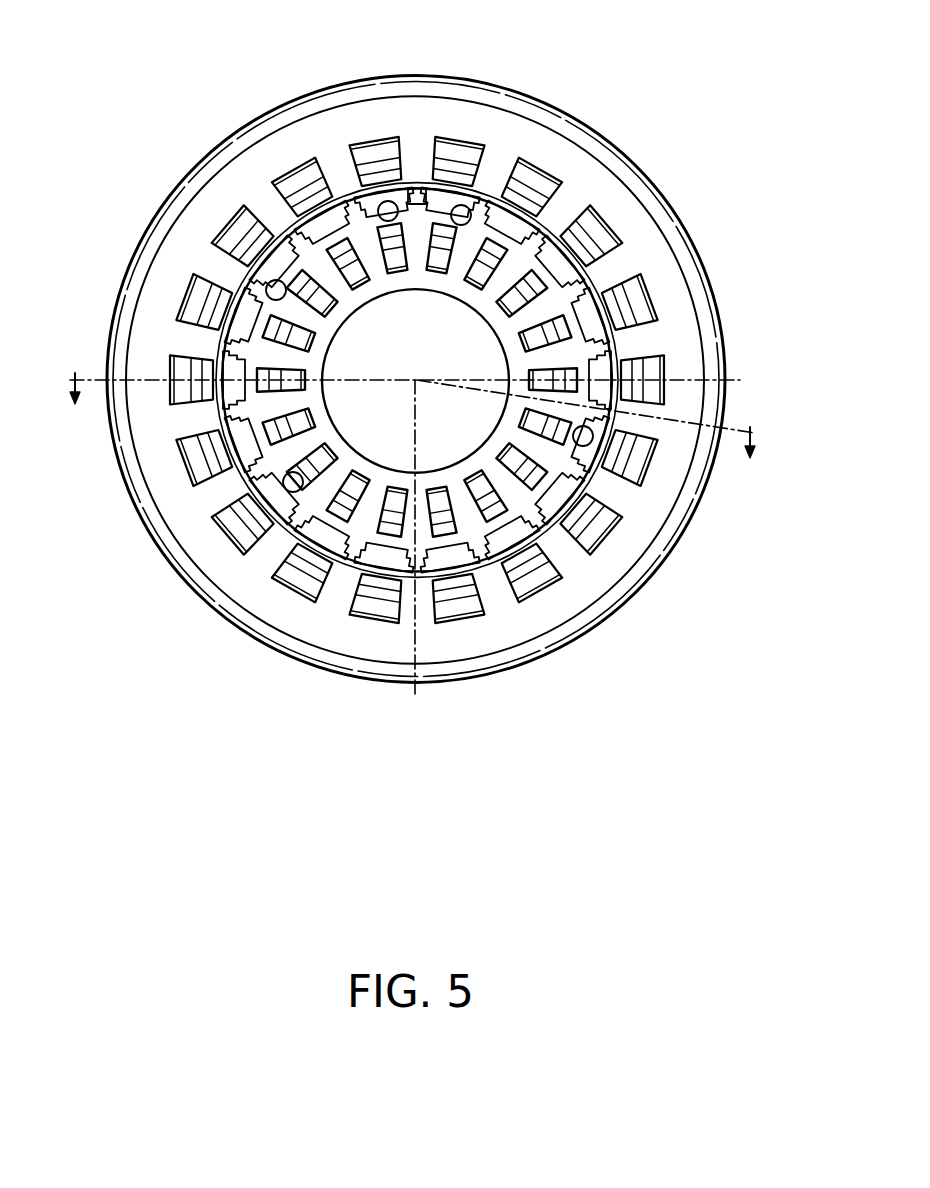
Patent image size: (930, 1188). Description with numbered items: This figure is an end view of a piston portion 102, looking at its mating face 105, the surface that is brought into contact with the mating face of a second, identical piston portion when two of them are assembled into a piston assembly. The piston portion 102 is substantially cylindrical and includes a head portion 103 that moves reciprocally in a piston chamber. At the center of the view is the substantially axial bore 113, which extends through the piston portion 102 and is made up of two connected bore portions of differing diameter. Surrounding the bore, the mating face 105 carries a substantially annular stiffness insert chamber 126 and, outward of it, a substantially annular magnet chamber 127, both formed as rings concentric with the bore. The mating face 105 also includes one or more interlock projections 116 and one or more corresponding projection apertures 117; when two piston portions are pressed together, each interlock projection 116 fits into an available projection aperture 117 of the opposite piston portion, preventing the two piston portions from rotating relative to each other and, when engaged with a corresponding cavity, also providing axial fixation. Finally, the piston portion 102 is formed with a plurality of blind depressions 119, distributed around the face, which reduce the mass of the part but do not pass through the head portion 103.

The piston portion 102 is at (146, 744).
The head portion 103 is at (215, 150).
The mating face 105 is at (273, 603).
The axial bore 113 is at (446, 433).
The interlock projection 116 is at (412, 200).
The projection aperture 117 is at (478, 212).
The blind depression 119 is at (378, 535).
The stiffness insert chamber 126 is at (533, 307).
The magnet chamber 127 is at (568, 162).